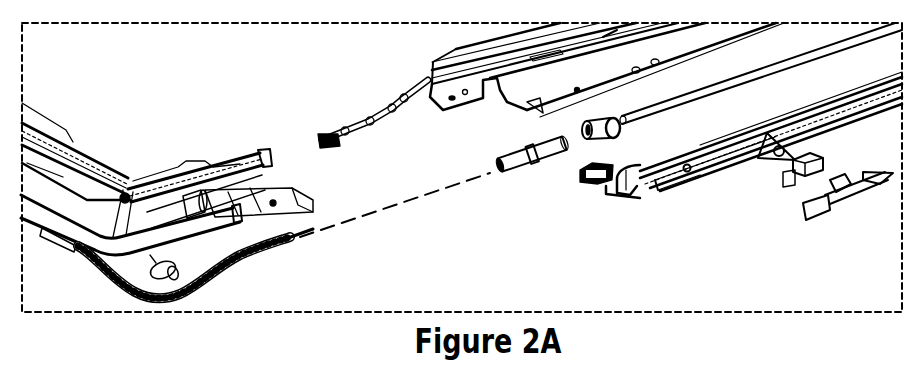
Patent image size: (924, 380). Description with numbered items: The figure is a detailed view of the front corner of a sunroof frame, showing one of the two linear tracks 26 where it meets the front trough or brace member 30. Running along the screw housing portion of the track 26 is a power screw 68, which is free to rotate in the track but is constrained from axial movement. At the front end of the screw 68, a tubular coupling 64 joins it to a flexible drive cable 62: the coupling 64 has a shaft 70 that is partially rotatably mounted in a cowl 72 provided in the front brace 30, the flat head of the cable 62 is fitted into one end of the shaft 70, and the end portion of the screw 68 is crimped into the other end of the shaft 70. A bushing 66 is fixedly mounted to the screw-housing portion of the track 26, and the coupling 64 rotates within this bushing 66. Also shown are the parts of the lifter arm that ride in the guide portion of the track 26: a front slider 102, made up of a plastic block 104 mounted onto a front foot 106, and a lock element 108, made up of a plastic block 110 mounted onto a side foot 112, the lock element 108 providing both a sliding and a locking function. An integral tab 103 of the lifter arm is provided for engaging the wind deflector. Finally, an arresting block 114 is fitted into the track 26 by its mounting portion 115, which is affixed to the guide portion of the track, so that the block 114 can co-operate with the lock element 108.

The linear track 26 is at (455, 47).
The front brace member 30 is at (137, 140).
The flexible drive cable 62 is at (231, 266).
The tubular coupling 64 is at (540, 182).
The bushing 66 is at (624, 129).
The power screw 68 is at (735, 78).
The shaft 70 is at (520, 160).
The cowl 72 is at (168, 205).
The front slider 102 is at (603, 200).
The integral tab 103 is at (672, 182).
The plastic block 104 is at (581, 183).
The front foot 106 is at (627, 195).
The lock element 108 is at (782, 184).
The plastic block 110 is at (818, 157).
The side foot 112 is at (767, 153).
The arresting block 114 is at (873, 187).
The mounting portion 115 is at (820, 220).